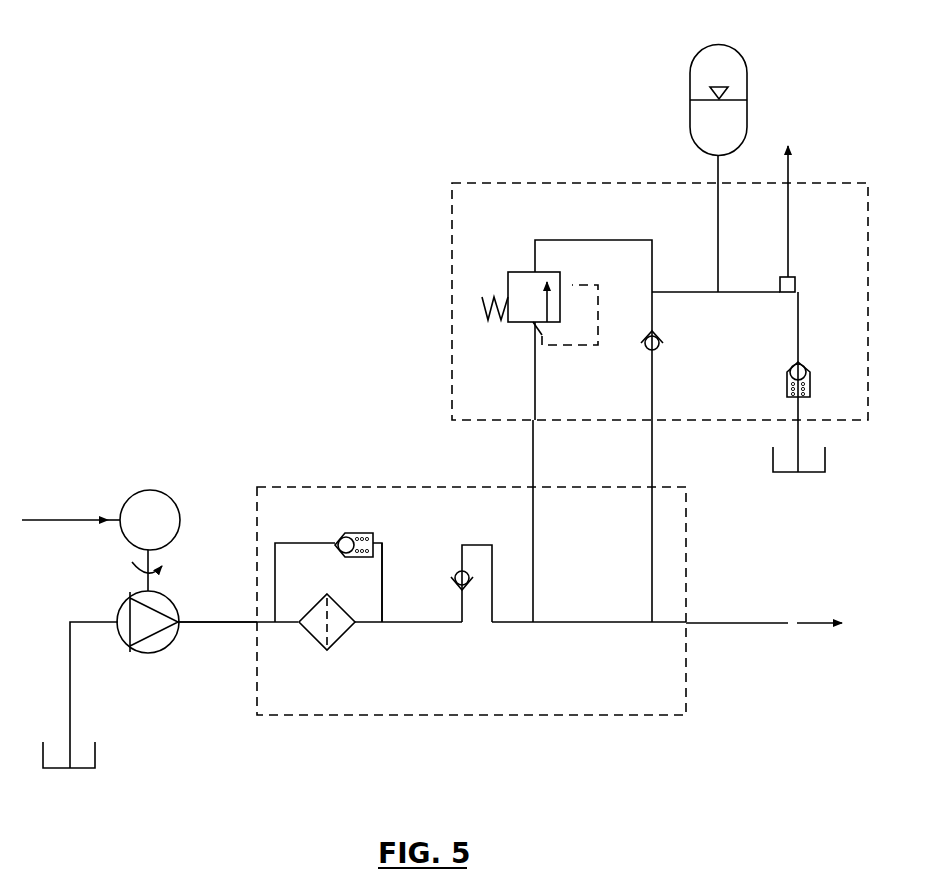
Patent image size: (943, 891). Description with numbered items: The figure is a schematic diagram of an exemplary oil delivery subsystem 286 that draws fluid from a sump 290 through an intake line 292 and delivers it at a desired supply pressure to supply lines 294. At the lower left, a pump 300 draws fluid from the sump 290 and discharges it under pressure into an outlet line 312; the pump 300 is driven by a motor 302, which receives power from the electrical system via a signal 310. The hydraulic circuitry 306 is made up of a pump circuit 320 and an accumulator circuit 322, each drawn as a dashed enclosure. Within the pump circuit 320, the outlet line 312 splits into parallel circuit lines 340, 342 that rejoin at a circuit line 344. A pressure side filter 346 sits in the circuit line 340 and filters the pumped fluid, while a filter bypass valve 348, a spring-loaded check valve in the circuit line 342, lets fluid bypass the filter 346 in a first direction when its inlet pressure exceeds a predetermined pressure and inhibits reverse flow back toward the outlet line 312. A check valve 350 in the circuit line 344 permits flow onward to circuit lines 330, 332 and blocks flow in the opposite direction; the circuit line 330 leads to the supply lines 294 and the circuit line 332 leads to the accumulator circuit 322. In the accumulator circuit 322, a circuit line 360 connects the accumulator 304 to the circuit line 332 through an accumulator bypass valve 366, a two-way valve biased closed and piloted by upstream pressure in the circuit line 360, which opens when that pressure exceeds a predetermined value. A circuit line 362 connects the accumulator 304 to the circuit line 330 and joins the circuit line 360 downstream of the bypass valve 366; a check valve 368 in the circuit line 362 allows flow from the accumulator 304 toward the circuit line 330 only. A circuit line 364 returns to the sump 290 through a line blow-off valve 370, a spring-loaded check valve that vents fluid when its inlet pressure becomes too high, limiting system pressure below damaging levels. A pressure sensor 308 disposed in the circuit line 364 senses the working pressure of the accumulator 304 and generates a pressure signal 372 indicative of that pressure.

The oil delivery subsystem 286 is at (144, 81).
The sump 290 is at (95, 756).
The intake line 292 is at (70, 700).
The supply lines 294 is at (740, 623).
The pump 300 is at (119, 604).
The motor 302 is at (150, 490).
The accumulator 304 is at (690, 80).
The hydraulic circuitry 306 is at (337, 338).
The pressure sensor 308 is at (781, 277).
The signal 310 is at (84, 519).
The outlet line 312 is at (192, 622).
The pump circuit 320 is at (298, 487).
The accumulator circuit 322 is at (495, 183).
The circuit line 330 is at (652, 598).
The circuit line 332 is at (533, 558).
The circuit line 340 is at (283, 622).
The circuit line 342 is at (382, 565).
The circuit line 344 is at (478, 545).
The pressure side filter 346 is at (340, 636).
The filter bypass valve 348 is at (338, 537).
The check valve 350 is at (455, 585).
The circuit line 360 is at (535, 406).
The circuit line 362 is at (652, 406).
The circuit line 364 is at (798, 330).
The accumulator bypass valve 366 is at (517, 272).
The check valve 368 is at (660, 338).
The line blow-off valve 370 is at (790, 364).
The pressure signal 372 is at (788, 228).